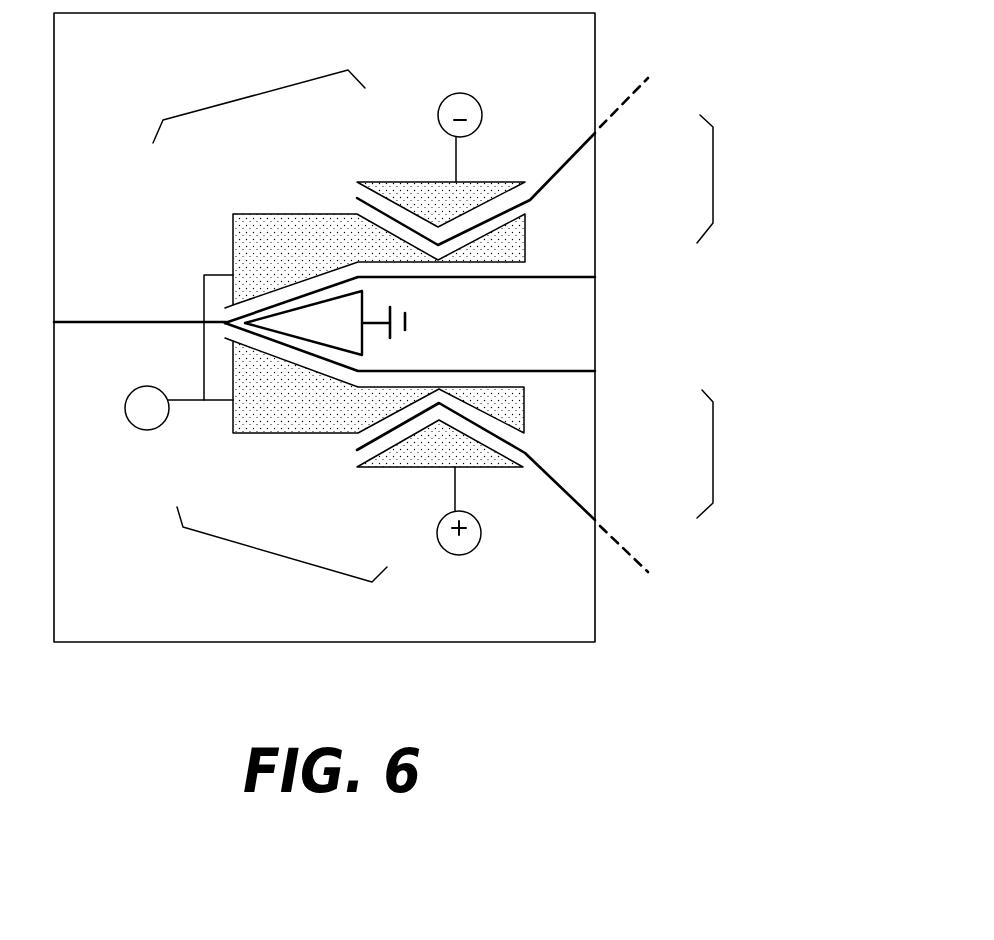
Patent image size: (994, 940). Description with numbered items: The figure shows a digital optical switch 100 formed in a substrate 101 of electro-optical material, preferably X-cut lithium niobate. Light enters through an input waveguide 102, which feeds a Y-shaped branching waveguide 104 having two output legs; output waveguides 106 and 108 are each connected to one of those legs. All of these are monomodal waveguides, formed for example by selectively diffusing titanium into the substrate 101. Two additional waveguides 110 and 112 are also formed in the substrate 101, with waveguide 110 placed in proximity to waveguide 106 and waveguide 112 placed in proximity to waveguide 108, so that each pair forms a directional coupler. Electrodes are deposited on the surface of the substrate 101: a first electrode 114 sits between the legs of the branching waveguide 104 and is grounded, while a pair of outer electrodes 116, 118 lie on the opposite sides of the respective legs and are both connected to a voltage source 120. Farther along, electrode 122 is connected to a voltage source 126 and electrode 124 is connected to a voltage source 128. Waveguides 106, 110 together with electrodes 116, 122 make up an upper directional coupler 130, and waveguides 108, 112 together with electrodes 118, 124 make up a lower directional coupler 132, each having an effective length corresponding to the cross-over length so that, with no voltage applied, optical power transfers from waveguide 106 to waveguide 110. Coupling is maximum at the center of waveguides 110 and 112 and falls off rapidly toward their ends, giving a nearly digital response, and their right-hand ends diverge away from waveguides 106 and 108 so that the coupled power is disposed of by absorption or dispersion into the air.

The optical switch 100 is at (750, 326).
The substrate 101 is at (562, 625).
The input waveguide 102 is at (180, 320).
The Y-shaped branching waveguide 104 is at (292, 300).
The output waveguide 106 is at (580, 278).
The output waveguide 108 is at (578, 372).
The waveguide 110 is at (583, 168).
The waveguide 112 is at (577, 462).
The first electrode 114 is at (362, 340).
The outer electrode 116 is at (240, 218).
The outer electrode 118 is at (288, 435).
The voltage source 120 is at (130, 428).
The electrode 122 is at (408, 180).
The electrode 124 is at (370, 498).
The voltage source 126 is at (462, 93).
The voltage source 128 is at (455, 555).
The upper directional coupler 130 is at (462, 152).
The lower directional coupler 132 is at (474, 492).